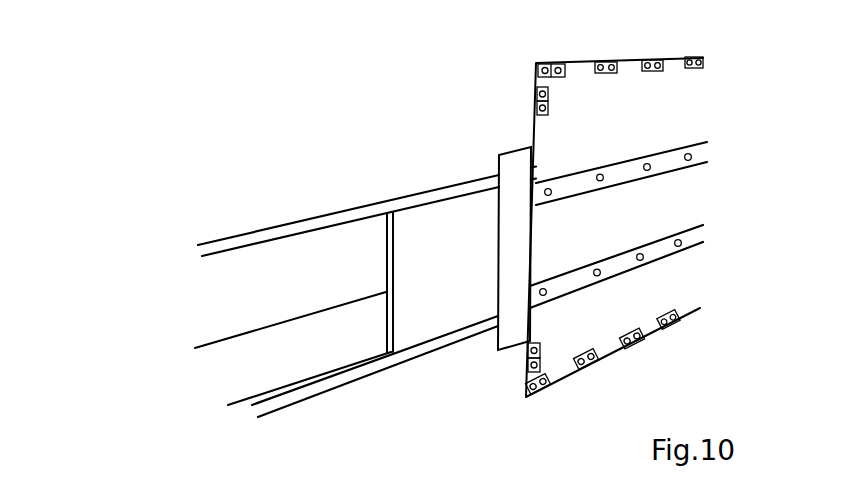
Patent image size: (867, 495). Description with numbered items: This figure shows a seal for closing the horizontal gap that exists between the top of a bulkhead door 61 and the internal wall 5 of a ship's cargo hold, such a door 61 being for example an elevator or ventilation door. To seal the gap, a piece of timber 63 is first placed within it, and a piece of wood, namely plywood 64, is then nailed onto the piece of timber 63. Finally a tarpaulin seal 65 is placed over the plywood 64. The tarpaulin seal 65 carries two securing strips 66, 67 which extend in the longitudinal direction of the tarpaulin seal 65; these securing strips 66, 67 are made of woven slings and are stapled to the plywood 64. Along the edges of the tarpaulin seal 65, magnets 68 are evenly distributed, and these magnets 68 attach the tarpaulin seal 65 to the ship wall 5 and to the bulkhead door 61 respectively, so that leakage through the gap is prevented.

The internal wall 5 is at (232, 265).
The door 61 is at (397, 380).
The piece of timber 63 is at (435, 215).
The plywood 64 is at (504, 155).
The tarpaulin seal 65 is at (568, 365).
The securing strip 66 is at (640, 160).
The securing strip 67 is at (665, 248).
The magnets 68 is at (597, 63).